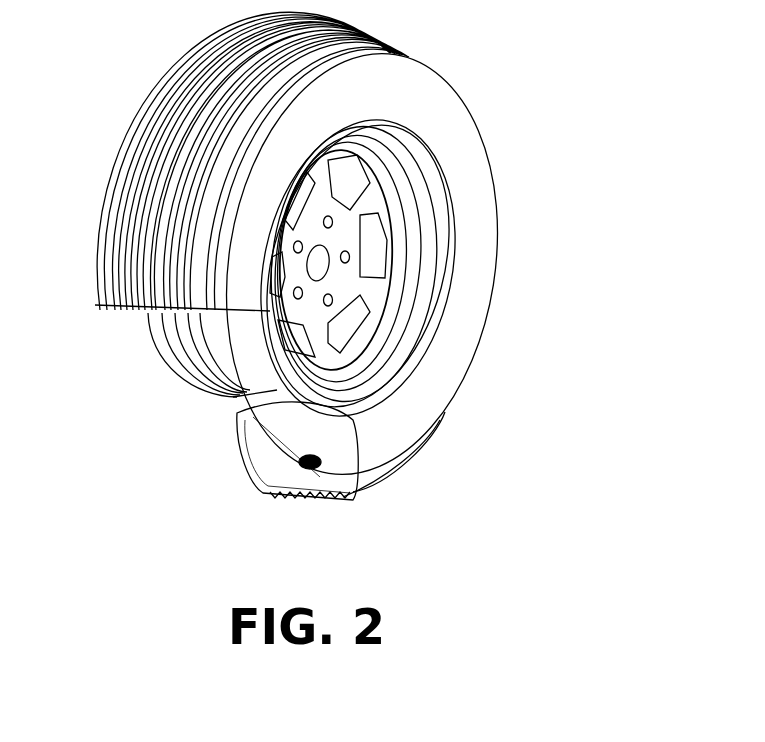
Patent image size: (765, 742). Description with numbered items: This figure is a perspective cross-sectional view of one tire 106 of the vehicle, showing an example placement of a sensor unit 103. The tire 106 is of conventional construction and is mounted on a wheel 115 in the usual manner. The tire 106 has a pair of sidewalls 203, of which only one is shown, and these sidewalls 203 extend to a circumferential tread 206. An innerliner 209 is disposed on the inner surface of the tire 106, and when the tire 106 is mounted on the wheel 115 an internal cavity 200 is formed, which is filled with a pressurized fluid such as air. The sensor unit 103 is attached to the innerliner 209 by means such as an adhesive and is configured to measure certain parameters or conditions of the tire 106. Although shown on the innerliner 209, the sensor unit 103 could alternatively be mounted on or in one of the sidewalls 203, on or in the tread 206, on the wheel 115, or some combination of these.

The circumferential tread 206 is at (141, 137).
The sidewall 203 is at (467, 255).
The wheel 115 is at (377, 290).
The internal cavity 200 is at (264, 473).
The innerliner 209 is at (283, 453).
The sensor unit 103 is at (320, 467).
The tire 106 is at (553, 547).